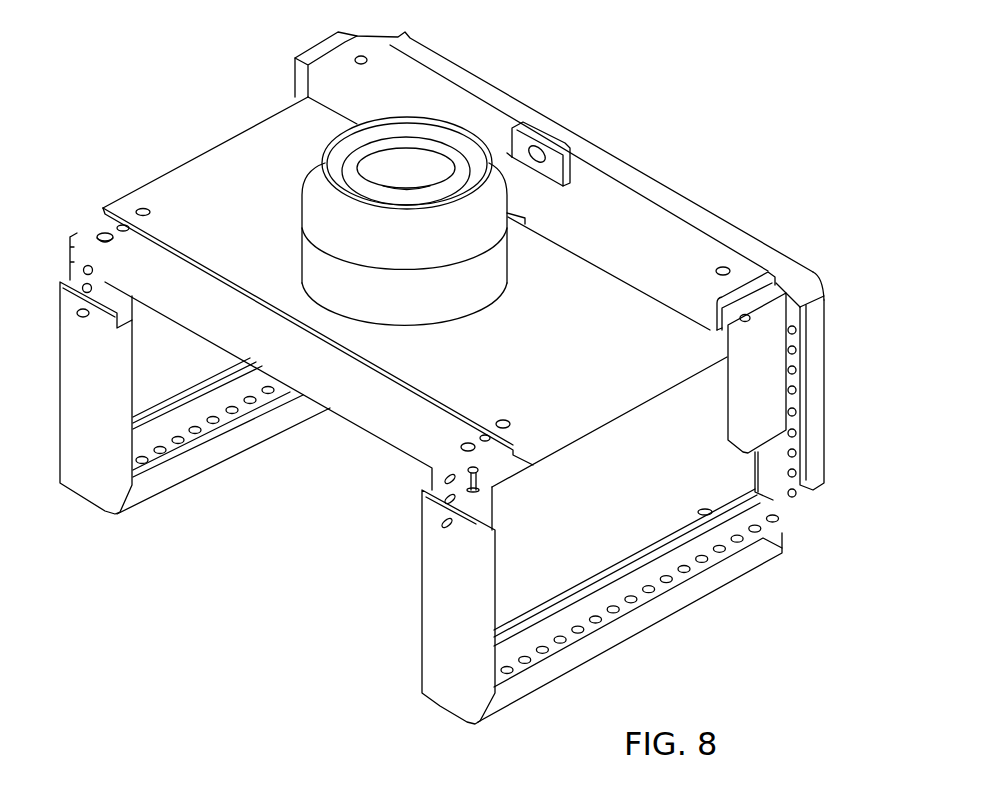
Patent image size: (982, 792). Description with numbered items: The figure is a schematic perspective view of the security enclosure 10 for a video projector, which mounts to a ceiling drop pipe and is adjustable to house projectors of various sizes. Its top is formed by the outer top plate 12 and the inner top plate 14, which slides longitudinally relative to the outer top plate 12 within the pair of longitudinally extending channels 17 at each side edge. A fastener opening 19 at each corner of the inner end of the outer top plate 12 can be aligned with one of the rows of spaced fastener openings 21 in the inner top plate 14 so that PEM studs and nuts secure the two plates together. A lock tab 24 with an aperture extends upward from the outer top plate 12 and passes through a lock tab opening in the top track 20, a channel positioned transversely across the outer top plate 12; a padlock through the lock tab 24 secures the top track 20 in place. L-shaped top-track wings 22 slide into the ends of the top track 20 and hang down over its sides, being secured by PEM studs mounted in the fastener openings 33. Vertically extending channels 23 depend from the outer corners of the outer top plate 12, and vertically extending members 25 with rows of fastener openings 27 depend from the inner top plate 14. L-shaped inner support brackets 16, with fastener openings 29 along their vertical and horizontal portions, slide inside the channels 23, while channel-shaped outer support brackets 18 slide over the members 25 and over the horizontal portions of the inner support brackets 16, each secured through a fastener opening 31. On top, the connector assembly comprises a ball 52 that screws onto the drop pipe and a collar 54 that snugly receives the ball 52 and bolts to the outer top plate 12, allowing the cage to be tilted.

The security enclosure 10 is at (746, 95).
The outer top plate 12 is at (265, 146).
The inner top plate 14 is at (336, 410).
The inner support bracket 16 is at (808, 503).
The channel 17 is at (811, 298).
The outer support bracket 18 is at (82, 384).
The fastener opening 19 is at (141, 207).
The top track 20 is at (651, 221).
The fastener opening 21 is at (103, 232).
The top-track wing 22 is at (774, 375).
The vertically extending channel 23 is at (815, 443).
The lock tab 24 is at (568, 151).
The vertically extending member 25 is at (466, 502).
The fastener opening 27 is at (84, 284).
The fastener opening 29 is at (765, 527).
The fastener opening 31 is at (77, 315).
The fastener opening 33 is at (364, 56).
The ball 52 is at (459, 158).
The collar 54 is at (424, 115).